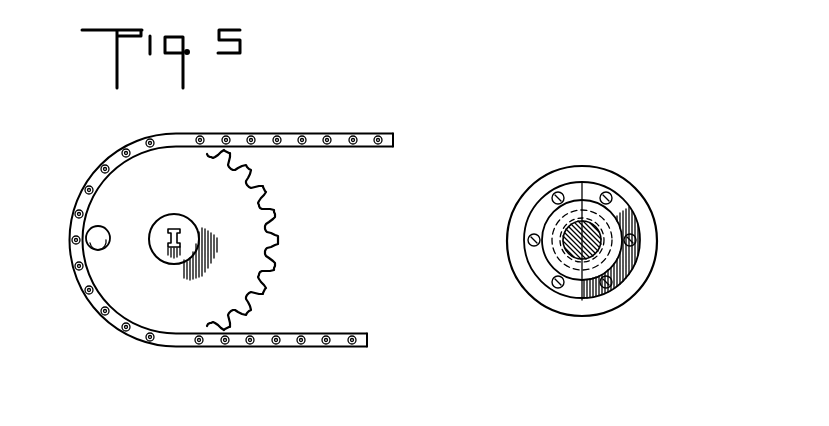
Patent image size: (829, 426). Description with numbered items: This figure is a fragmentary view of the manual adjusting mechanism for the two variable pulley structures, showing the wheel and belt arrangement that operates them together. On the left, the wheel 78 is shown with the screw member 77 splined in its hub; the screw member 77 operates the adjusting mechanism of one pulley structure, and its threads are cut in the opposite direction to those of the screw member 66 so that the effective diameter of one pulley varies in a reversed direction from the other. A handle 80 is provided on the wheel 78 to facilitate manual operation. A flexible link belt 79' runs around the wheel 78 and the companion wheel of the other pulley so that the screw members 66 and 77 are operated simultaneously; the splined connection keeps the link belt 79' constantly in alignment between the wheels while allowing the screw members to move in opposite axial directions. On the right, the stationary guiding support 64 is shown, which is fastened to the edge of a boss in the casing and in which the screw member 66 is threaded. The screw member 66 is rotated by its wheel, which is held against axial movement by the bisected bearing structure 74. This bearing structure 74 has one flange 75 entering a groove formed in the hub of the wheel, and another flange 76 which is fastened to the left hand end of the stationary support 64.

The link belt 79' is at (264, 231).
The screw member 77 is at (180, 230).
The wheel 78 is at (233, 289).
The handle 80 is at (97, 227).
The stationary guiding support 64 is at (657, 223).
The flange 76 is at (627, 203).
The bisected bearing structure 74 is at (548, 217).
The flange 75 is at (557, 260).
The screw member 66 is at (585, 257).